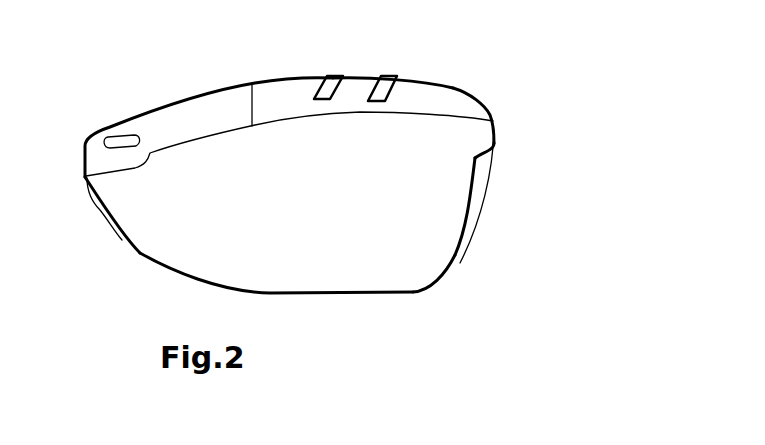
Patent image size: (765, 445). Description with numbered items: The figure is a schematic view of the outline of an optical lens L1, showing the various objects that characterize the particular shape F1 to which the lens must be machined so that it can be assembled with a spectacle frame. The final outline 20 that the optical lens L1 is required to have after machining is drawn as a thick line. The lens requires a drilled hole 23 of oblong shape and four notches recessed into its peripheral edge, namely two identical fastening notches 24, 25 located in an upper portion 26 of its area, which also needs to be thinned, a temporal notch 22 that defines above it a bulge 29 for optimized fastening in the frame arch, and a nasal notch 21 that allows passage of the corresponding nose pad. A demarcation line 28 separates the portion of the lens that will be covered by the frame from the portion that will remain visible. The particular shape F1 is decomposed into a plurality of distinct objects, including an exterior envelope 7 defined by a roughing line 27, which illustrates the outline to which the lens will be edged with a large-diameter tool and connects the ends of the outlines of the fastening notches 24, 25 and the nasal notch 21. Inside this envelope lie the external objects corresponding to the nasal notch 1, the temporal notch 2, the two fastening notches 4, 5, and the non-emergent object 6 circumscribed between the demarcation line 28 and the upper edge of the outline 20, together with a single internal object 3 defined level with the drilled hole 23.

The external object 1 is at (97, 203).
The external object 2 is at (480, 190).
The internal object 3 is at (110, 136).
The external object 4 is at (333, 100).
The external object 5 is at (373, 102).
The external object 6 is at (196, 129).
The exterior envelope 7 is at (250, 233).
The final outline 20 is at (482, 103).
The nasal notch 21 is at (125, 238).
The temporal notch 22 is at (483, 163).
The drilled hole 23 is at (140, 140).
The fastening notch 24 is at (334, 77).
The fastening notch 25 is at (389, 77).
The upper portion 26 is at (435, 98).
The roughing line 27 is at (465, 243).
The demarcation line 28 is at (252, 84).
The bulge 29 is at (490, 152).
The particular shape F1 is at (499, 128).
The optical lens L1 is at (573, 235).